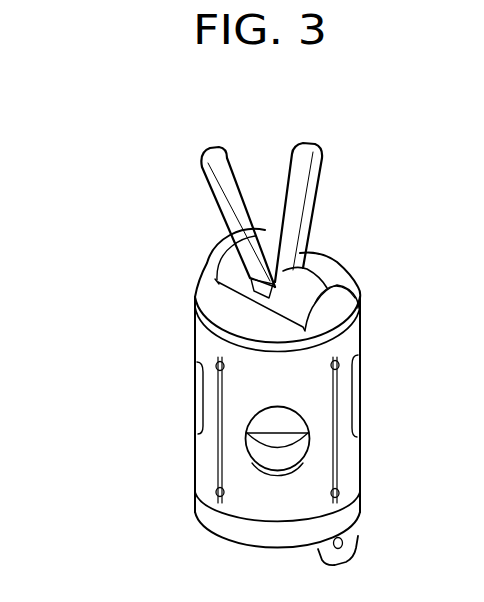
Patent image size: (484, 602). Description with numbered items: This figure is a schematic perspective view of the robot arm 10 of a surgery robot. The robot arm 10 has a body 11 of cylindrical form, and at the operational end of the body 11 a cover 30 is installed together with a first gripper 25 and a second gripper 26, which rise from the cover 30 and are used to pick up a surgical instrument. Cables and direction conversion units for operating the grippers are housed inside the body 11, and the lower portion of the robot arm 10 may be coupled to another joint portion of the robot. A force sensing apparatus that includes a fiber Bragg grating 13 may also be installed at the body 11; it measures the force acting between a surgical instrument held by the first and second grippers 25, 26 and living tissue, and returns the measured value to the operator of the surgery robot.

The robot arm 10 is at (374, 440).
The body 11 is at (353, 345).
The fiber Bragg grating (FBG) 13 is at (337, 400).
The first gripper 25 is at (213, 157).
The second gripper 26 is at (305, 148).
The cover 30 is at (353, 288).